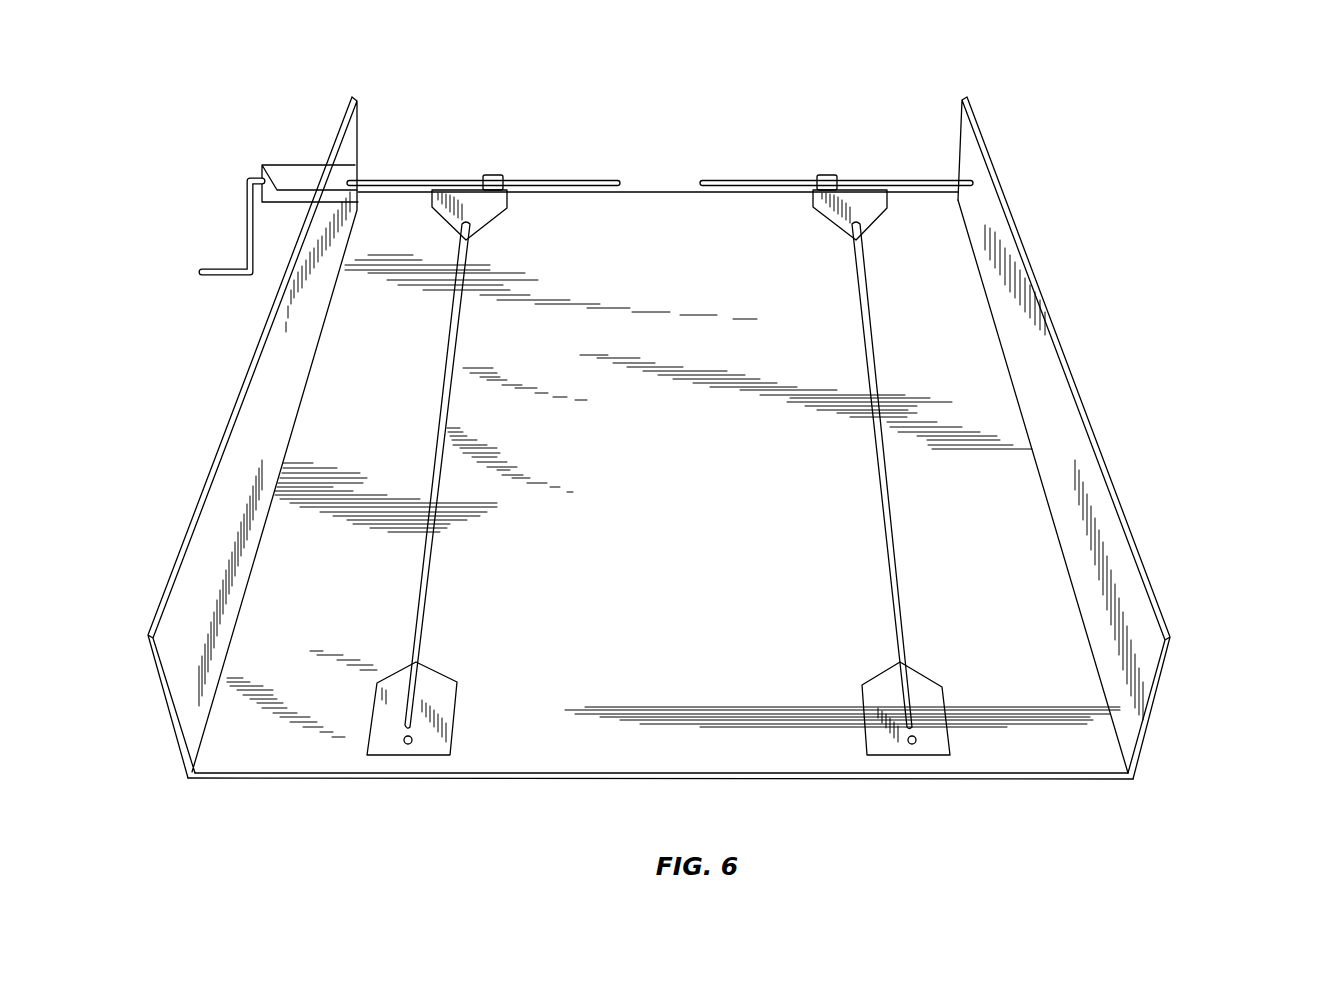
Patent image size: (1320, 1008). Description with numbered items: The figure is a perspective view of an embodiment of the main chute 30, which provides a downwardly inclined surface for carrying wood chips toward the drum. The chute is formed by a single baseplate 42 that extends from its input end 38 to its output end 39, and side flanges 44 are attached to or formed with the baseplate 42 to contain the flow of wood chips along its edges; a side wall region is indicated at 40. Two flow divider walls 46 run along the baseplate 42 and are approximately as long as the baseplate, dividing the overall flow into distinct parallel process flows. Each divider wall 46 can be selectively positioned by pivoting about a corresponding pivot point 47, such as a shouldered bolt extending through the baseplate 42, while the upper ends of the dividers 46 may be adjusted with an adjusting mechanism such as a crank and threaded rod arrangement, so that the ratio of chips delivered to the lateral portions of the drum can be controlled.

The main chute 30 is at (519, 127).
The input end 38 is at (1035, 153).
The output end 39 is at (1212, 615).
The side wall inner face 40 is at (1080, 328).
The baseplate 42 is at (668, 208).
The side flanges 44 is at (188, 537).
The flow divider walls 46 is at (866, 330).
The pivot points 47 is at (412, 743).